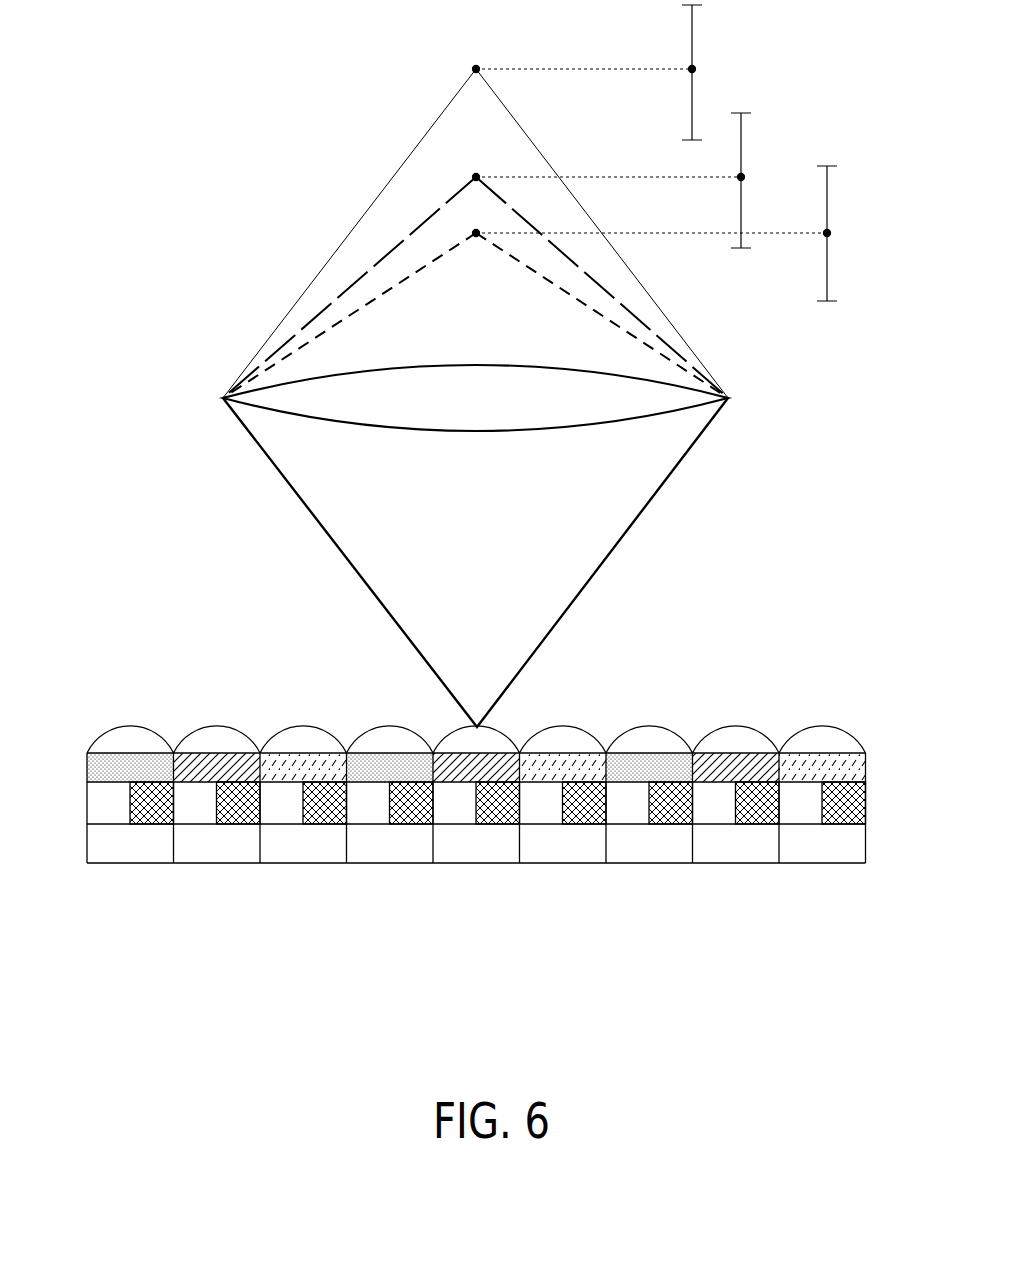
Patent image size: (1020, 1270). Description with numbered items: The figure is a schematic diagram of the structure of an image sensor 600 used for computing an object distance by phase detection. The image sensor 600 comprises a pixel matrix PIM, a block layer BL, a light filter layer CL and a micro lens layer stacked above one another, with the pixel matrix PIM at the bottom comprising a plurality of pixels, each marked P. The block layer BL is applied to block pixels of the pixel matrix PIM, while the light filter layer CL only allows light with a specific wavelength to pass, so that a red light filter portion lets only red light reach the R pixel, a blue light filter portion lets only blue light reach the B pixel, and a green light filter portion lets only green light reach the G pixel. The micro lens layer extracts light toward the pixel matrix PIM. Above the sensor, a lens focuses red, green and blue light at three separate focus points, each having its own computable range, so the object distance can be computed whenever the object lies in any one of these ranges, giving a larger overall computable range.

The image sensor 600 is at (467, 832).
The light filter layer CL is at (828, 763).
The block layer BL is at (852, 826).
The pixel matrix PIM is at (801, 855).
The photodiode P is at (475, 846).